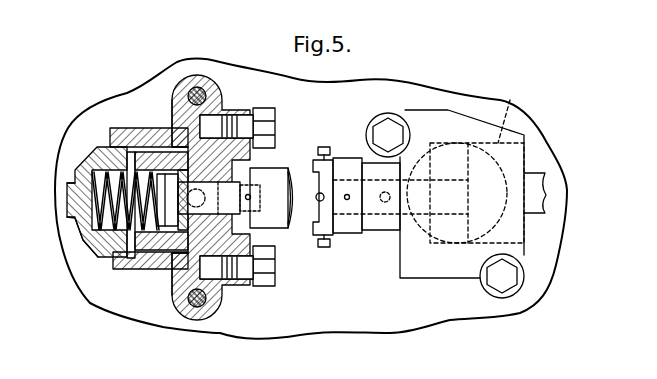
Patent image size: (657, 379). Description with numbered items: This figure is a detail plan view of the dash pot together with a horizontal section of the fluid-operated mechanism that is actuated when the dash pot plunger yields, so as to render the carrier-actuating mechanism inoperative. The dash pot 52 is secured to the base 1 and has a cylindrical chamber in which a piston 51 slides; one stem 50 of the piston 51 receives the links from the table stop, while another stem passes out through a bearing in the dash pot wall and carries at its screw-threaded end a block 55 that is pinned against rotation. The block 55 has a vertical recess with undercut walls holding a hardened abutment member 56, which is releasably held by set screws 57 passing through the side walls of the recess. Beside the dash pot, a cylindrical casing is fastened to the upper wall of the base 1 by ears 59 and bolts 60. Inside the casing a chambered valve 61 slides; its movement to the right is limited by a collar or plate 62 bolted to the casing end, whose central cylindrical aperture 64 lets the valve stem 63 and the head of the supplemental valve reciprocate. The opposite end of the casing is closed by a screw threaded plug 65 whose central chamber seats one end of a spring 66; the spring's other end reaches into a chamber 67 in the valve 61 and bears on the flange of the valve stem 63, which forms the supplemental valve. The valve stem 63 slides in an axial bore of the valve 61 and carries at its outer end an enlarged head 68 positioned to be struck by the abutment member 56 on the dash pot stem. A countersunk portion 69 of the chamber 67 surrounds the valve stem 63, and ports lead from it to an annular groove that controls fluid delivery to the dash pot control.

The base 1 is at (565, 221).
The stem 50 is at (545, 172).
The piston 51 is at (513, 106).
The dash pot 52 is at (435, 115).
The block 55 is at (345, 162).
The abutment member 56 is at (313, 185).
The set screws 57 is at (324, 147).
The ears 59 is at (207, 77).
The bolts 60 is at (192, 88).
The chambered valve 61 is at (173, 158).
The collar or plate 62 is at (240, 113).
The valve stem 63 is at (238, 220).
The central cylindrical aperture 64 is at (254, 160).
The screw threaded plug 65 is at (88, 238).
The spring 66 is at (97, 150).
The chamber 67 is at (160, 163).
The enlarged head 68 is at (277, 217).
The countersunk portion 69 is at (173, 270).